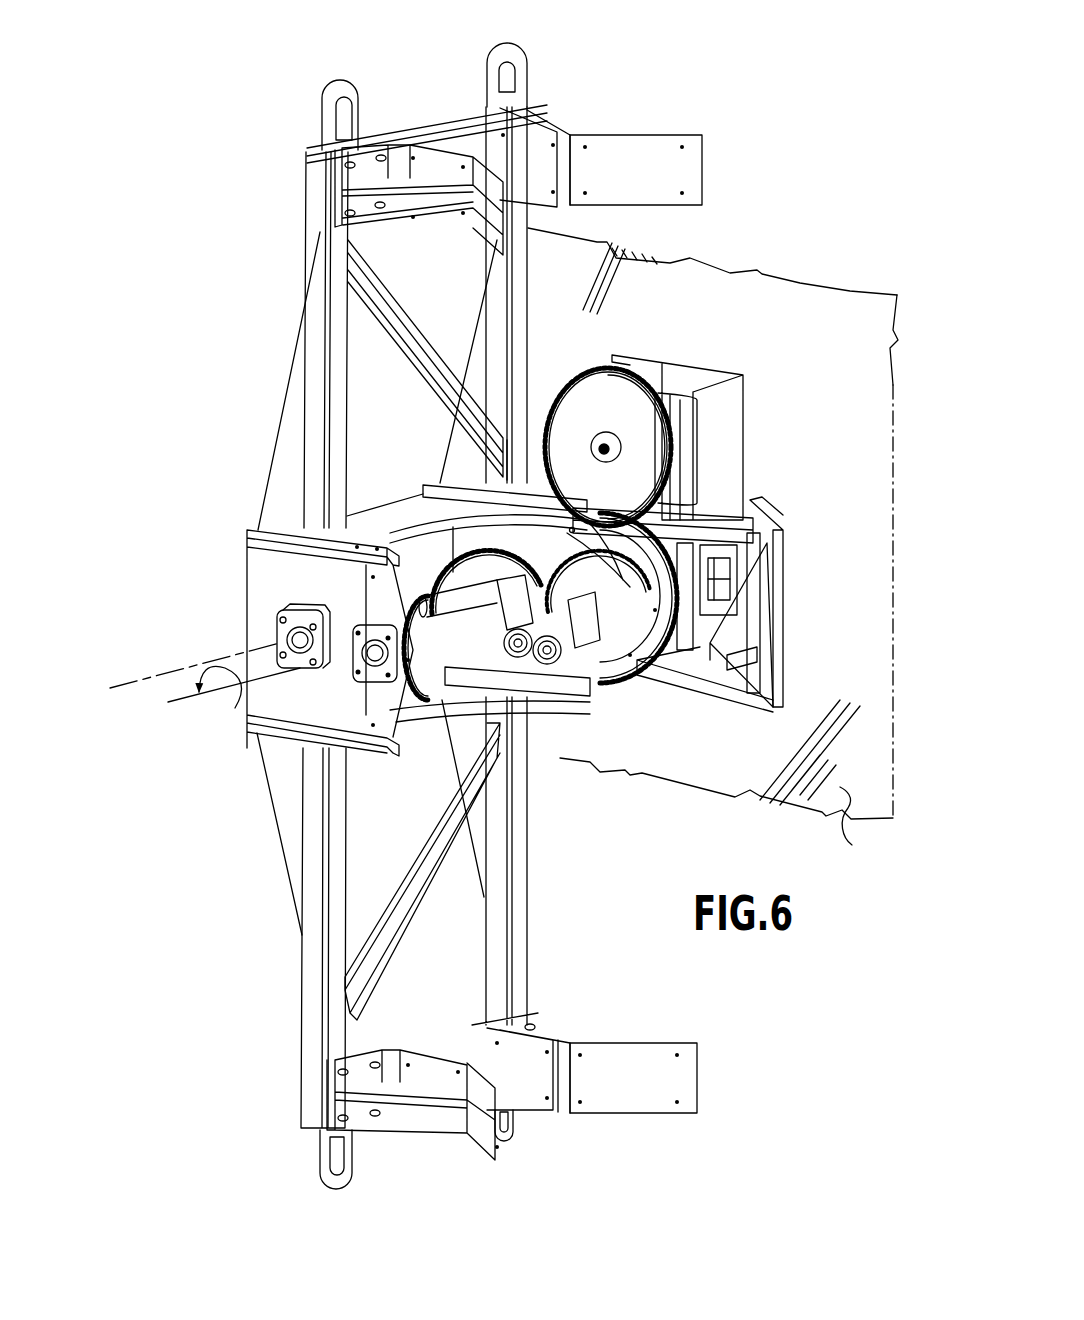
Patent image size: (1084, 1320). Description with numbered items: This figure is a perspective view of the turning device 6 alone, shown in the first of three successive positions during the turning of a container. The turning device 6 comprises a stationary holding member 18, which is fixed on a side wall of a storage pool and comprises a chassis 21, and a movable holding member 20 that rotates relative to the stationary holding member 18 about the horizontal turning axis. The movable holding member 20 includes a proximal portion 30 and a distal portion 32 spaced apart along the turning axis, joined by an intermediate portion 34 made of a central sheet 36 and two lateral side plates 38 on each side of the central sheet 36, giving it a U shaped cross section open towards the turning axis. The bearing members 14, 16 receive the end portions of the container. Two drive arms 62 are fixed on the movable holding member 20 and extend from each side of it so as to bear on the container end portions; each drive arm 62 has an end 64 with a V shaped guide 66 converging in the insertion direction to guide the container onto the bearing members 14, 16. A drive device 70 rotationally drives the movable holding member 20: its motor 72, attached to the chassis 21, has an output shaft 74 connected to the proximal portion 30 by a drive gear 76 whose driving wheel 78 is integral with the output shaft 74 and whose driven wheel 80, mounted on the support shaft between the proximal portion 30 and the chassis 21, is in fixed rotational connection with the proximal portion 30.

The turning device 6 is at (808, 158).
The bearing member 14 is at (582, 668).
The bearing member 16 is at (416, 718).
The stationary holding member 18 is at (810, 564).
The movable holding member 20 is at (240, 567).
The chassis 21 is at (750, 625).
The proximal portion 30 is at (632, 682).
The distal portion 32 is at (262, 615).
The intermediate portion 34 is at (393, 492).
The central sheet 36 is at (403, 553).
The lateral side plates 38 is at (416, 513).
The drive arms 62 is at (292, 186).
The end 64 is at (578, 118).
The V shaped guide 66 is at (704, 134).
The drive device 70 is at (640, 335).
The motor 72 is at (708, 388).
The output shaft 74 is at (601, 443).
The drive gear 76 is at (696, 470).
The driving wheel 78 is at (630, 425).
The driven wheel 80 is at (655, 590).